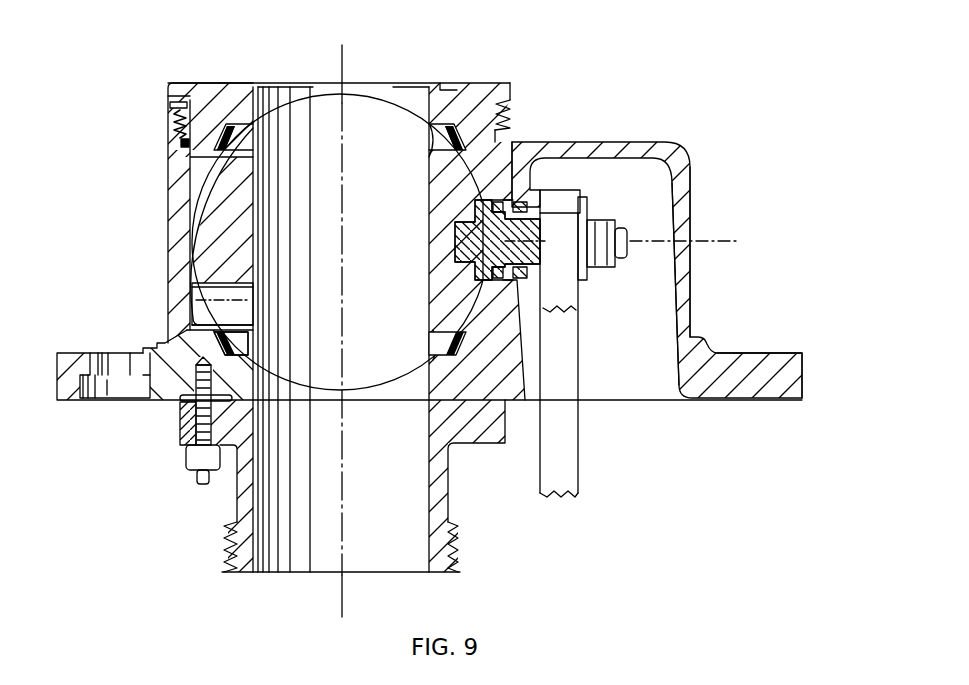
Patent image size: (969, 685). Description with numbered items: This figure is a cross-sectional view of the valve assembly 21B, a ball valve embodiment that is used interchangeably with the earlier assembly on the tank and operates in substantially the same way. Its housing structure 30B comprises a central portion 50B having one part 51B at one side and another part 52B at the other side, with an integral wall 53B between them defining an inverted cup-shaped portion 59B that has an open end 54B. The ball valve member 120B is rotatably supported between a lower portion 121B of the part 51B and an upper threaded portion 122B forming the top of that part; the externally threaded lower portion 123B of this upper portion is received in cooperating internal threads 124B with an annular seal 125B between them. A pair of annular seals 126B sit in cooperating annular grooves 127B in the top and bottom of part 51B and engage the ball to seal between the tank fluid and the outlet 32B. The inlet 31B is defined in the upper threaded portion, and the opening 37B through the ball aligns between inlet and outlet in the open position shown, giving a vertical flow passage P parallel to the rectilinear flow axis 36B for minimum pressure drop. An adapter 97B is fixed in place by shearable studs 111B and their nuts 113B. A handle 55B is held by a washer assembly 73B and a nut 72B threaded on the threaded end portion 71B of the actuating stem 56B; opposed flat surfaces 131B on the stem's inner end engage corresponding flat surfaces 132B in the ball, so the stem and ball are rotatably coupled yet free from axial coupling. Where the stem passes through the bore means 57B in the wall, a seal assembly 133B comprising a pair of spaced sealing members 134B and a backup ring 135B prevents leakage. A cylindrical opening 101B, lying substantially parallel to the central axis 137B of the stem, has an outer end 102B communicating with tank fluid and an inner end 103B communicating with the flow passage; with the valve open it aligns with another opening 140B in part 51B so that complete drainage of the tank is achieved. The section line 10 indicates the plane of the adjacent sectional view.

The valve assembly 21B is at (787, 120).
The housing structure 30B is at (690, 147).
The inlet 31B is at (267, 82).
The outlet 32B is at (420, 385).
The rectilinear flow axis 36B is at (344, 495).
The opening 37B is at (438, 88).
The central portion 50B is at (690, 178).
The part 51B is at (210, 83).
The part 52B is at (590, 141).
The integral wall 53B is at (510, 404).
The open end 54B is at (690, 356).
The handle 55B is at (580, 452).
The actuating stem 56B is at (541, 190).
The bore means 57B is at (460, 240).
The inverted cup-shaped portion 59B is at (672, 313).
The threaded end portion 71B is at (627, 247).
The nut 72B is at (604, 272).
The washer assembly 73B is at (590, 200).
The adapter 97B is at (235, 507).
The cylindrical opening 101B is at (243, 335).
The outer end 102B is at (195, 262).
The inner end 103B is at (240, 285).
The shearable studs 111B is at (197, 419).
The nuts 113B is at (192, 458).
The ball valve member 120B is at (210, 198).
The lower portion 121B is at (183, 340).
The upper threaded portion 122B is at (173, 93).
The externally threaded lower portion 123B is at (183, 136).
The internal threads 124B is at (185, 117).
The annular seal 125B is at (180, 103).
The annular seals 126B is at (428, 152).
The annular grooves 127B is at (493, 105).
The opposed flat surfaces 131B is at (493, 207).
The opposed flat surfaces 132B is at (478, 224).
The seal assembly 133B is at (504, 198).
The sealing members 134B is at (480, 292).
The backup ring 135B is at (516, 207).
The central axis 137B is at (657, 241).
The opening 140B is at (183, 288).
The section line 10 is at (365, 52).
The vertical flow passage P is at (325, 368).